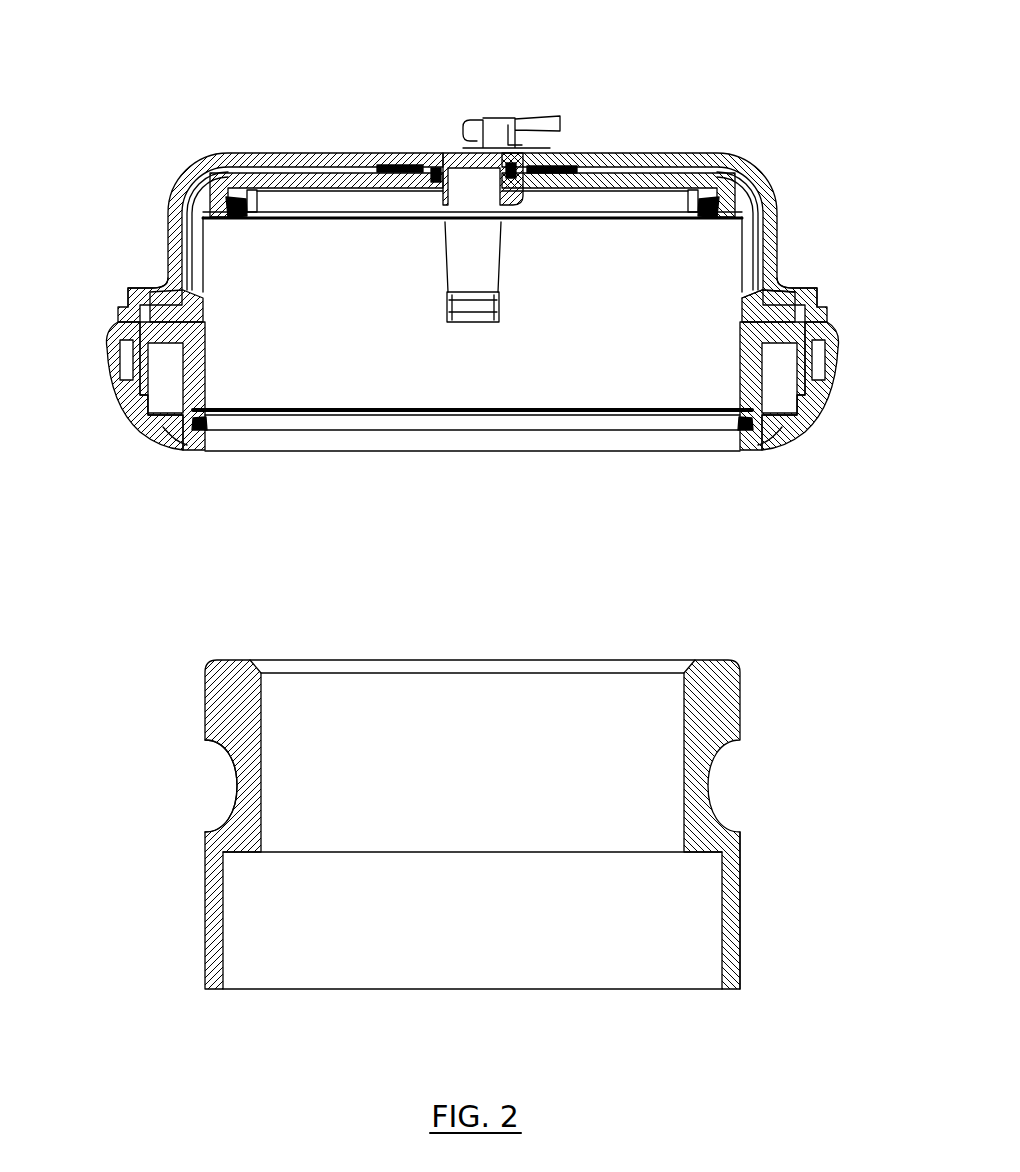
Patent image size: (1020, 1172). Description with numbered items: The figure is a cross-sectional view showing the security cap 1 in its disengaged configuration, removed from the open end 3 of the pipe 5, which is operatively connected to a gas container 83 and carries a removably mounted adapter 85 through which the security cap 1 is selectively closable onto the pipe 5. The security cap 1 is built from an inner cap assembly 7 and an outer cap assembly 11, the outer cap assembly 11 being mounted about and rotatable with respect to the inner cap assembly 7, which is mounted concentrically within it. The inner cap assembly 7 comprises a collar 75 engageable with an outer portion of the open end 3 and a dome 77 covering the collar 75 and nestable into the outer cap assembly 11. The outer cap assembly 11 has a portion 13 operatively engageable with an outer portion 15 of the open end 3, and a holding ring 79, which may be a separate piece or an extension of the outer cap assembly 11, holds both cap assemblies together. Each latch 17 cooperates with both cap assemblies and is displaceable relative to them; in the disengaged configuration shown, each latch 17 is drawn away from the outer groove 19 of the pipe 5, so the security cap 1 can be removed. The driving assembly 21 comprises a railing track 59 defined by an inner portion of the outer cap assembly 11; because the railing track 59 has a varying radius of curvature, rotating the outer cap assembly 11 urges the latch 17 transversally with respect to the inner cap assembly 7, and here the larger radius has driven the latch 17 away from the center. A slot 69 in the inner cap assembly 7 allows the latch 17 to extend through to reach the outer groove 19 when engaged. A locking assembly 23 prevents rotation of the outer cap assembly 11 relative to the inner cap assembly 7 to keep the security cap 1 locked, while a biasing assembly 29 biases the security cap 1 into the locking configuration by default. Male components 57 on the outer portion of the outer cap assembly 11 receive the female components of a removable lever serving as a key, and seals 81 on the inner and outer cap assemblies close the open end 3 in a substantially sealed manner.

The security cap 1 is at (796, 140).
The open end 3 is at (657, 624).
The pipe 5 is at (742, 713).
The inner cap assembly 7 is at (205, 345).
The outer cap assembly 11 is at (166, 250).
The portion 13 is at (98, 371).
The outer portion 15 is at (186, 861).
The latch 17 is at (503, 313).
The outer groove 19 is at (214, 771).
The driving assembly 21 is at (130, 286).
The locking assembly 23 is at (409, 157).
The biasing assembly 29 is at (496, 206).
The male component 57 is at (491, 111).
The railing track 59 is at (158, 320).
The slot 69 is at (444, 266).
The collar 75 is at (202, 385).
The dome 77 is at (245, 187).
The holding ring 79 is at (802, 432).
The seals 81 is at (438, 152).
The gas container 83 is at (488, 953).
The adapter 85 is at (810, 881).